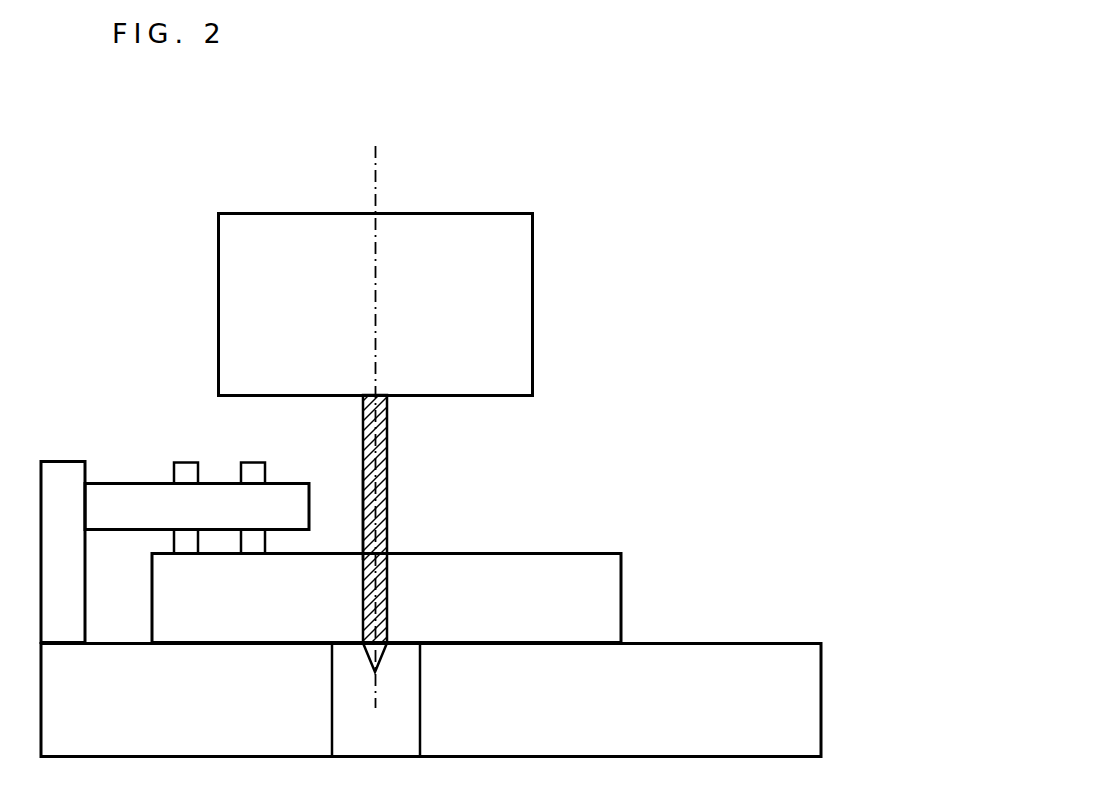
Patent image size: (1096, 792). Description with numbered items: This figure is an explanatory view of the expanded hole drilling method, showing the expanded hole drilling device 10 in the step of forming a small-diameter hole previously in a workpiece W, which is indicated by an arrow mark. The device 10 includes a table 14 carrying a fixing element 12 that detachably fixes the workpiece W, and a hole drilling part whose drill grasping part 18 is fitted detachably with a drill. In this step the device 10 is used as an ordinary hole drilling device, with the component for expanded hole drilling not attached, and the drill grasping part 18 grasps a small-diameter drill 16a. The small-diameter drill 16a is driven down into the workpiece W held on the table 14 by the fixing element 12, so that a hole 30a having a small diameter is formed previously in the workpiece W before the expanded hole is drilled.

The expanded hole drilling device 10 is at (392, 117).
The fixing element 12 is at (173, 463).
The table 14 is at (782, 644).
The small-diameter drill 16a is at (388, 530).
The drill grasping part 18 is at (533, 282).
The hole 30a is at (363, 523).
The workpiece W is at (630, 568).